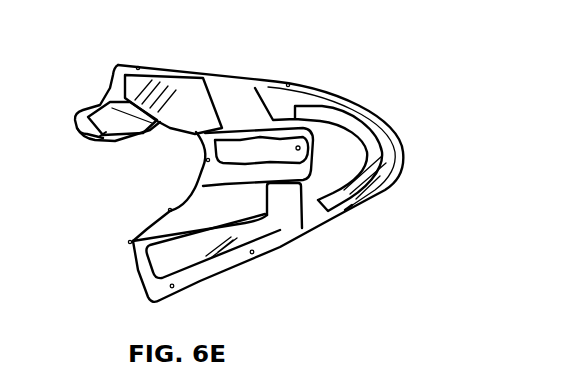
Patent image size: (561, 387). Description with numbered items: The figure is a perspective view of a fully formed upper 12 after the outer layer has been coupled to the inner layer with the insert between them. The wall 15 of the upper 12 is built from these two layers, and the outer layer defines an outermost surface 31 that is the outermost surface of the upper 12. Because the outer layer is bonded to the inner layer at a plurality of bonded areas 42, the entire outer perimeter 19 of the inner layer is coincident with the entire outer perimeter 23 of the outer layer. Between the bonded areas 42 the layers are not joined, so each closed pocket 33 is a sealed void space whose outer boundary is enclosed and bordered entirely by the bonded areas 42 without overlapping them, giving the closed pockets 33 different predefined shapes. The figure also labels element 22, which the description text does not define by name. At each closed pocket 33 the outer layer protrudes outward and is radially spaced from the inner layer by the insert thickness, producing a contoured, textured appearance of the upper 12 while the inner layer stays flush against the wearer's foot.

The upper 12 is at (280, 182).
The wall 15 is at (346, 85).
The outer perimeter of the inner layer 19 is at (391, 236).
The outer perimeter of the outer layer 23 is at (361, 213).
The reinforcing wall section 22 is at (104, 111).
The outermost surface 31 is at (230, 82).
The closed pocket 33 is at (160, 66).
The bonded areas 42 is at (255, 120).